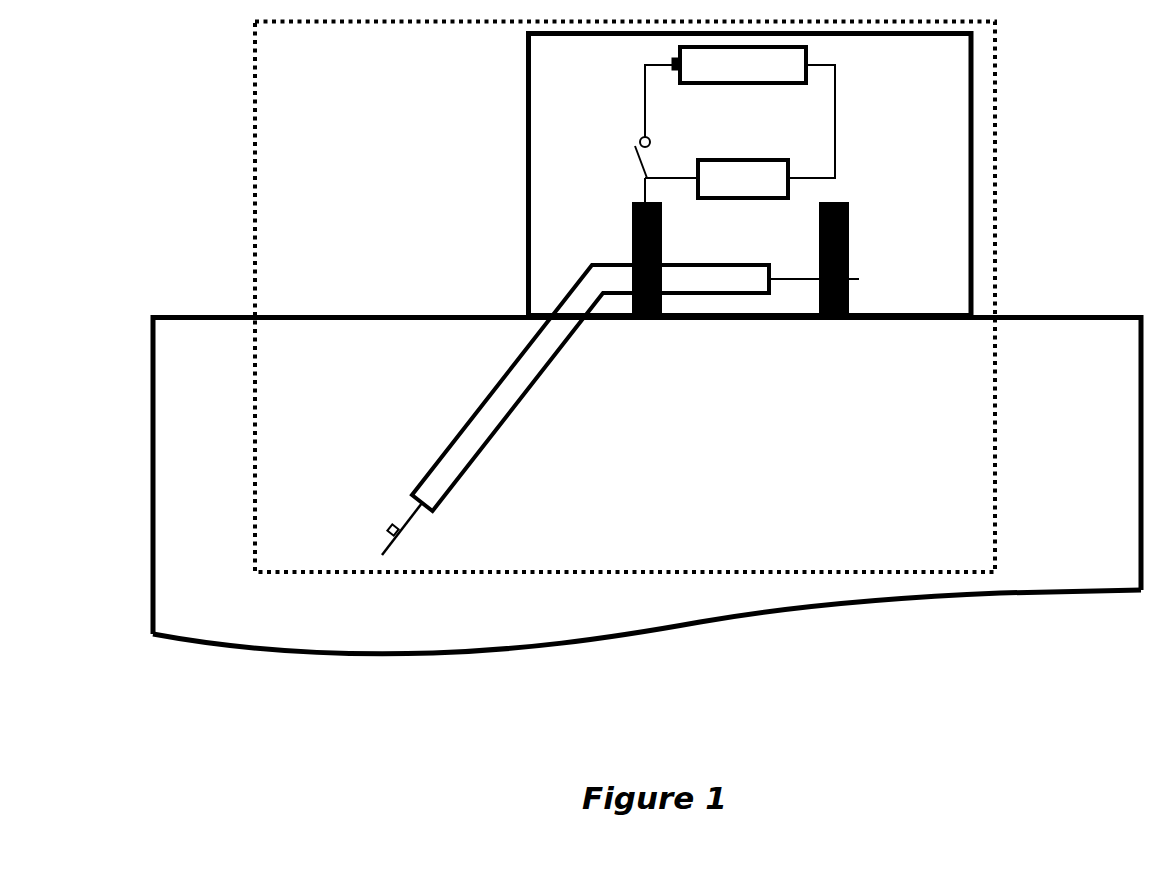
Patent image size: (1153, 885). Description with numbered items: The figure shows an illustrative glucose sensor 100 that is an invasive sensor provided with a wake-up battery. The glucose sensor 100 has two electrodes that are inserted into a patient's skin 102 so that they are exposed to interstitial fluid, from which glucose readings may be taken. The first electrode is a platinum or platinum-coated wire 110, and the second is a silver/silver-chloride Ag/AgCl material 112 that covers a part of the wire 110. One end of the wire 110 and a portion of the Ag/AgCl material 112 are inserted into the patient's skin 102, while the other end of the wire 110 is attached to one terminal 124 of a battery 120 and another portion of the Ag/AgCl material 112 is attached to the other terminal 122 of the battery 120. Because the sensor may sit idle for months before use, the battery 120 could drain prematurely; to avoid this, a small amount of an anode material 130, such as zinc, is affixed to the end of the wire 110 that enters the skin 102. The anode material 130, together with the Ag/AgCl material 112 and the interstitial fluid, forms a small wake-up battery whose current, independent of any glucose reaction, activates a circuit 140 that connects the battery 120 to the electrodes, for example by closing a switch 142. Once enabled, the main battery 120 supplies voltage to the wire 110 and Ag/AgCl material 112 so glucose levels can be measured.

The glucose sensor 100 is at (253, 134).
The patient's skin 102 is at (152, 458).
The wire 110 is at (380, 548).
The Ag/AgCl material 112 is at (467, 425).
The battery 120 is at (739, 65).
The terminal 122 is at (632, 220).
The terminal 124 is at (849, 212).
The anode material 130 is at (392, 530).
The circuit 140 is at (743, 179).
The switch 142 is at (635, 157).